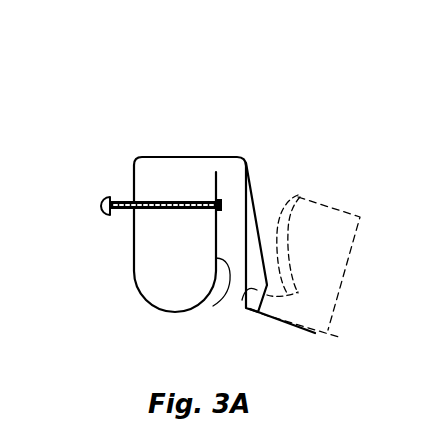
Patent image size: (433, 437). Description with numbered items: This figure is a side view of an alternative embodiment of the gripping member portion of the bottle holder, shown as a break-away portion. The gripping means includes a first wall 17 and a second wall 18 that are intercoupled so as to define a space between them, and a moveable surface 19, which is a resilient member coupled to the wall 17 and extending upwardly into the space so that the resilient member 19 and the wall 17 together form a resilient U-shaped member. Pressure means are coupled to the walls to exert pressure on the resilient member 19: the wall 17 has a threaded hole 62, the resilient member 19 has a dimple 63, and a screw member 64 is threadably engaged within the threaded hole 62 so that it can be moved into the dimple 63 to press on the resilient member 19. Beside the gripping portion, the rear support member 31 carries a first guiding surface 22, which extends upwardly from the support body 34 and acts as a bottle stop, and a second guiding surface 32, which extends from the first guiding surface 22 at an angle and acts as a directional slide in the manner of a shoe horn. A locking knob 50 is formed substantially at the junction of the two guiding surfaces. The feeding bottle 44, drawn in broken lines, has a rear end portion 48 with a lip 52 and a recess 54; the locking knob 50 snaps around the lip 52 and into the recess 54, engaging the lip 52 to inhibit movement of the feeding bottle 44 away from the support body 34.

The first opposing wall 17 is at (132, 258).
The second opposing wall 18 is at (245, 215).
The moveable surface 19 is at (213, 306).
The first guiding surface 22 is at (249, 310).
The rear support member 31 is at (251, 232).
The second guiding surface 32 is at (260, 205).
The support body 34 is at (281, 316).
The feeding bottle 44 is at (337, 207).
The rear end portion 48 is at (303, 193).
The locking knob 50 is at (266, 290).
The lip 52 is at (297, 292).
The recess 54 is at (293, 197).
The threaded hole 62 is at (131, 203).
The dimple 63 is at (213, 209).
The screw member 64 is at (155, 203).